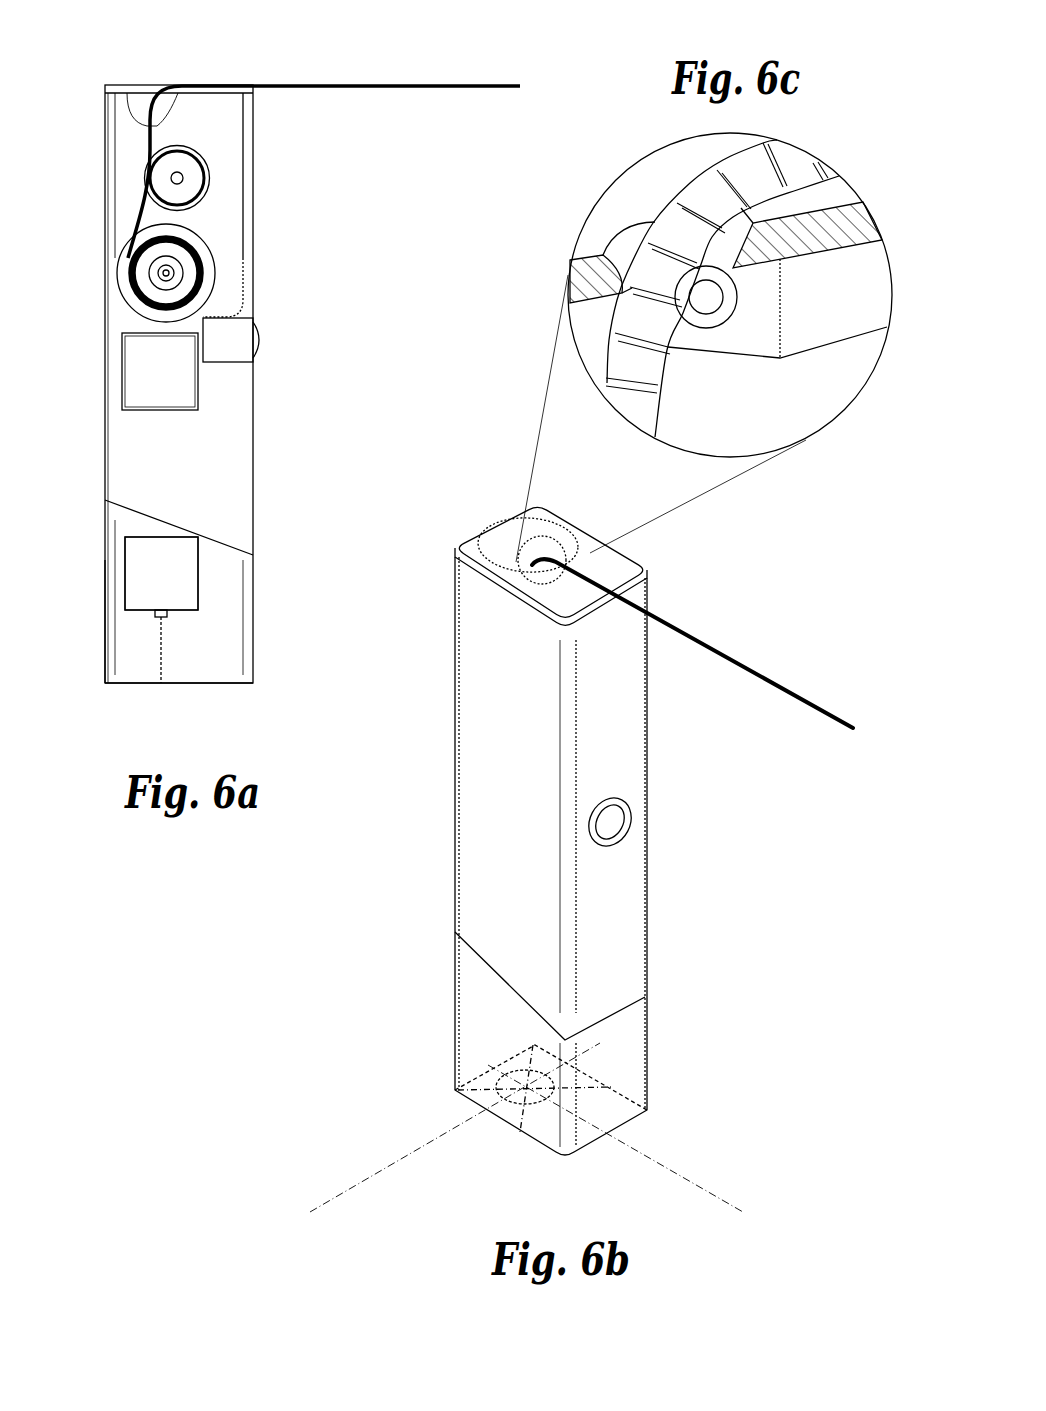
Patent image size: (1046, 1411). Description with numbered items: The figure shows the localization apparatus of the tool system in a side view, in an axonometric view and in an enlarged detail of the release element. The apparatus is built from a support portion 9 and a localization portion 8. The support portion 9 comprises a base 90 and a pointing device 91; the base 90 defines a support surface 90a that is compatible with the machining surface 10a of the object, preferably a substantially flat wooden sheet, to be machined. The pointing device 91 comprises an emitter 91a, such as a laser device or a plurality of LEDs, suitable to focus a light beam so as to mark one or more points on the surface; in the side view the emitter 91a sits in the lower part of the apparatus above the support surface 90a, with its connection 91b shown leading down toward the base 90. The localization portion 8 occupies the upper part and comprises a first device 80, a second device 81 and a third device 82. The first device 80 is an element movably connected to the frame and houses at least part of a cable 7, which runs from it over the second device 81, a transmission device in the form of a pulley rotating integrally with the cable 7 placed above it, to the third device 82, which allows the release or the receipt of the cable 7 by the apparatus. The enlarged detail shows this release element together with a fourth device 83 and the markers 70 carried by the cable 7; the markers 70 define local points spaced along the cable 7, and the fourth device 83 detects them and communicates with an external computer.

In FIG. 6A, the cable 7 is at (443, 88).
In FIG. 6B, the cable 7 is at (765, 678).
In FIG. 6C, the cable 7 is at (684, 405).
In FIG. 6A, the localization portion 8 is at (283, 449).
In FIG. 6B, the localization portion 8 is at (551, 808).
In FIG. 6A, the support portion 9 is at (270, 593).
In FIG. 6B, the machining surface 10a is at (526, 1127).
In FIG. 6C, the markers 70 is at (817, 181).
In FIG. 6A, the first device 80 is at (132, 314).
In FIG. 6A, the second device 81 is at (208, 170).
In FIG. 6A, the third device 82 is at (153, 80).
In FIG. 6C, the third device 82 is at (613, 237).
In FIG. 6C, the fourth device 83 is at (777, 308).
In FIG. 6A, the base 90 is at (105, 660).
In FIG. 6A, the support surface 90a is at (183, 683).
In FIG. 6B, the support surface 90a is at (627, 1112).
In FIG. 6A, the pointing device 91 is at (127, 525).
In FIG. 6B, the pointing device 91 is at (497, 1074).
In FIG. 6A, the emitter 91a is at (161, 573).
In FIG. 6A, the connecting line 91b is at (160, 640).